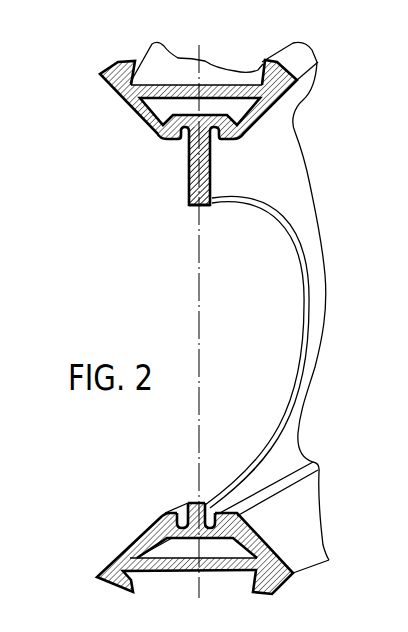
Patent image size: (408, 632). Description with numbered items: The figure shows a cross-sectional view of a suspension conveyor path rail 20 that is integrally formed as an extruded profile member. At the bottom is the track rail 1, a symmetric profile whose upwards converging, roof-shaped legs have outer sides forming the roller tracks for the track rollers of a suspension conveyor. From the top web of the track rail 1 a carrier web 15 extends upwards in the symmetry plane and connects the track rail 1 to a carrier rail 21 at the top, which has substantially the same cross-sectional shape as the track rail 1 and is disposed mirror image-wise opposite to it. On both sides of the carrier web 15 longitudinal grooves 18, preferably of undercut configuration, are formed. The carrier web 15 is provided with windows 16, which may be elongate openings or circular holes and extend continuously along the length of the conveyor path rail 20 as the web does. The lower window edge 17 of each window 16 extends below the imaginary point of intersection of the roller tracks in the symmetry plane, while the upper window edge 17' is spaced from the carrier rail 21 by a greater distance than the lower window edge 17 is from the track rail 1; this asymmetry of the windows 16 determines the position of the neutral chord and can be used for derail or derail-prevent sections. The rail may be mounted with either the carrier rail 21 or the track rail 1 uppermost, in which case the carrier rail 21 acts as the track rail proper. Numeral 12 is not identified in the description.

The track rail 1 is at (127, 530).
The tire 12 is at (158, 73).
The carrier web 15 is at (215, 508).
The window 16 is at (303, 307).
The lower window edge 17 is at (175, 469).
The upper window edge 17' is at (220, 235).
The longitudinal groove 18 is at (183, 138).
The conveyor path rail 20 is at (190, 260).
The carrier rail 21 is at (130, 112).